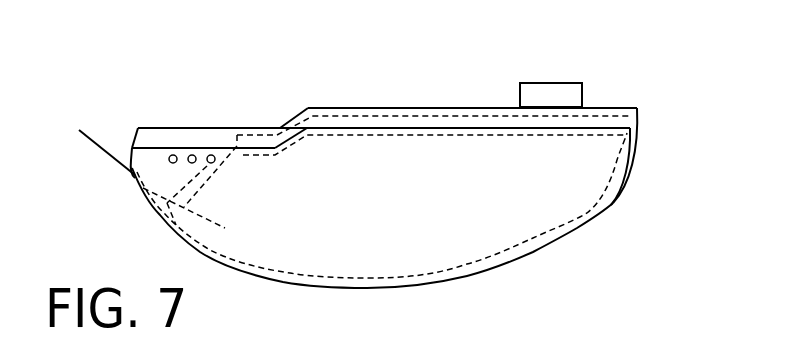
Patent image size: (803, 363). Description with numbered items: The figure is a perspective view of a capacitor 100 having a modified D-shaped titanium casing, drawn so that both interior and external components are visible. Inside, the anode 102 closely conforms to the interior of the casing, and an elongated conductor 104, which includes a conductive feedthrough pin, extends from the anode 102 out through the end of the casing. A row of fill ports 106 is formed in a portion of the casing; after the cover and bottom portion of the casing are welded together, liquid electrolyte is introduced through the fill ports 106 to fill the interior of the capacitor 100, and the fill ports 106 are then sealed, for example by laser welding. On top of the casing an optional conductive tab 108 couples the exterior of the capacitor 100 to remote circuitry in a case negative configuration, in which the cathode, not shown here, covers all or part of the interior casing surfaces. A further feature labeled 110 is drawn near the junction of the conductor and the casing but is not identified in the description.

The capacitor 100 is at (292, 84).
The anode 102 is at (577, 208).
The elongated conductor 104 is at (94, 146).
The fill ports 106 is at (217, 146).
The conductive tab 108 is at (553, 83).
The hinge 110 is at (133, 182).